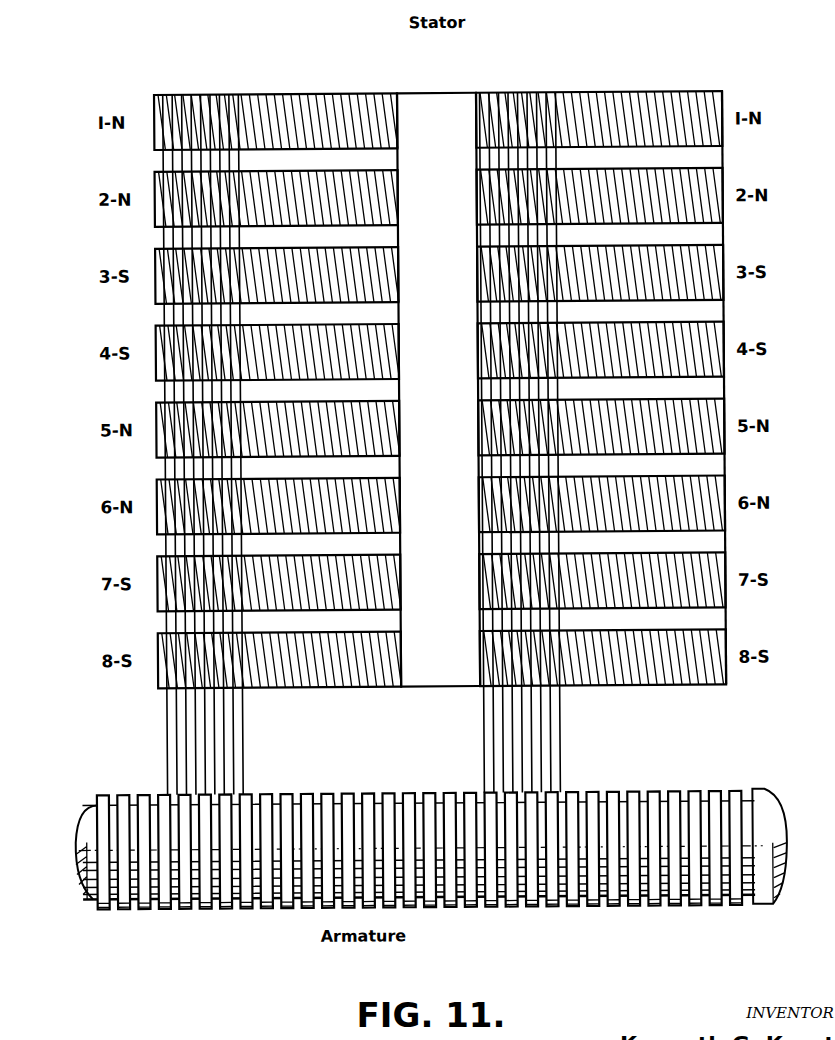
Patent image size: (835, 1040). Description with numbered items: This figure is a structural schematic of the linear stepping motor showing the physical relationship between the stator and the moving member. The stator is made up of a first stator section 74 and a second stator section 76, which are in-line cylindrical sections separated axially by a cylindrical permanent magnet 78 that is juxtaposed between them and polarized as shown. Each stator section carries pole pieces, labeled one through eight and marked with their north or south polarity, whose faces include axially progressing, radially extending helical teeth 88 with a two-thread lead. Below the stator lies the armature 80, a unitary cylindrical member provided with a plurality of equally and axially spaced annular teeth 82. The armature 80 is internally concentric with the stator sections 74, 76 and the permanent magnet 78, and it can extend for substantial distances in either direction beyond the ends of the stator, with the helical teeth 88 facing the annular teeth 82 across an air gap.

The first stator section 74 is at (318, 86).
The second stator section 76 is at (646, 89).
The permanent magnet 78 is at (425, 127).
The armature 80 is at (431, 850).
The annular teeth 82 is at (468, 907).
The helical teeth 88 is at (323, 686).